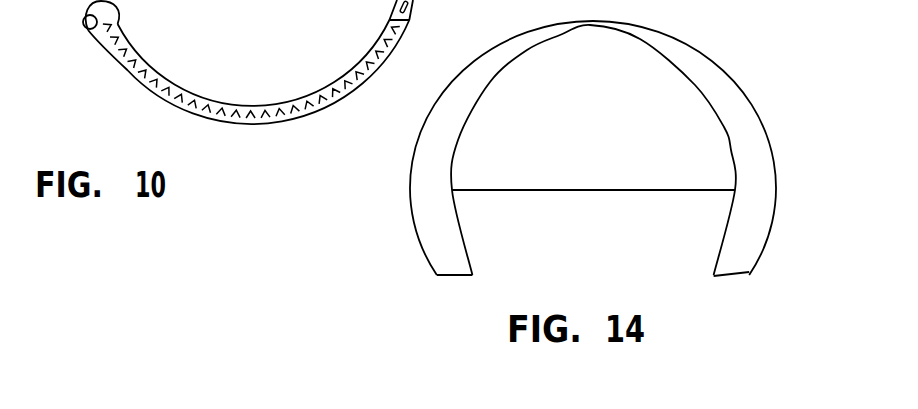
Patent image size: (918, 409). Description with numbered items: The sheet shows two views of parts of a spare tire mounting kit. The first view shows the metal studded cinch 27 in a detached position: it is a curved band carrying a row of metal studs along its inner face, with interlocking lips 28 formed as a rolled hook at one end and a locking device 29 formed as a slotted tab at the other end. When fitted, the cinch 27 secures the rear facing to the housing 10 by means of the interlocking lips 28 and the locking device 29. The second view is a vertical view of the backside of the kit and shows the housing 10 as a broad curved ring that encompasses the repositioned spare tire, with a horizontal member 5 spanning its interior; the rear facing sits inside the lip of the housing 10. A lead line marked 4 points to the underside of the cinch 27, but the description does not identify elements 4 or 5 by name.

In FIG. 10, the band 4 is at (254, 124).
In FIG. 10, the metal studded cinch 27 is at (170, 98).
In FIG. 10, the interlocking lips 28 is at (85, 28).
In FIG. 10, the locking device 29 is at (409, 7).
In FIG. 14, the housing 10 is at (750, 145).
In FIG. 14, the cross bar 5 is at (776, 190).